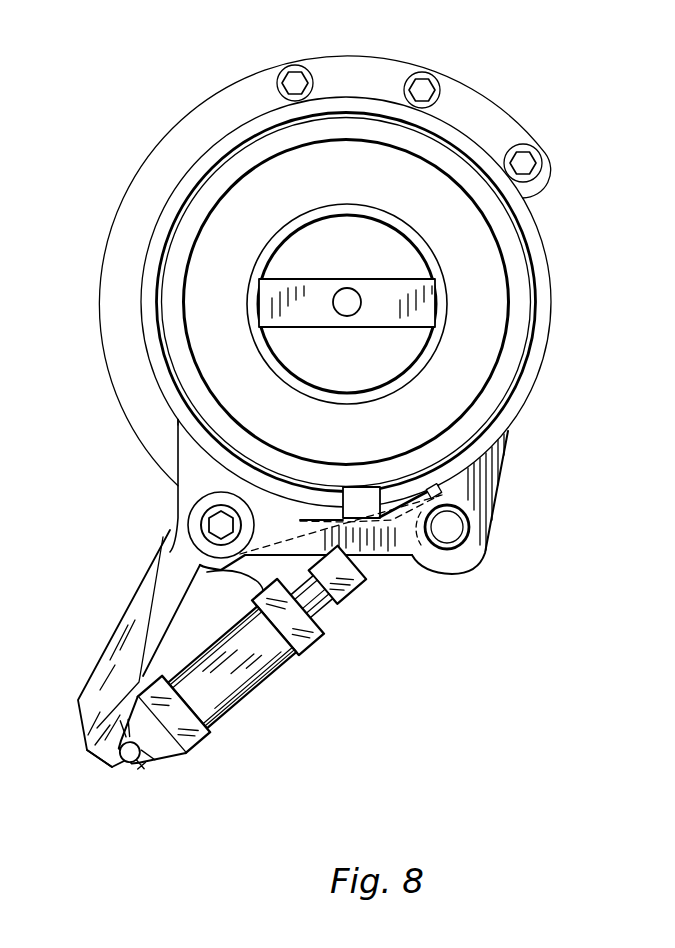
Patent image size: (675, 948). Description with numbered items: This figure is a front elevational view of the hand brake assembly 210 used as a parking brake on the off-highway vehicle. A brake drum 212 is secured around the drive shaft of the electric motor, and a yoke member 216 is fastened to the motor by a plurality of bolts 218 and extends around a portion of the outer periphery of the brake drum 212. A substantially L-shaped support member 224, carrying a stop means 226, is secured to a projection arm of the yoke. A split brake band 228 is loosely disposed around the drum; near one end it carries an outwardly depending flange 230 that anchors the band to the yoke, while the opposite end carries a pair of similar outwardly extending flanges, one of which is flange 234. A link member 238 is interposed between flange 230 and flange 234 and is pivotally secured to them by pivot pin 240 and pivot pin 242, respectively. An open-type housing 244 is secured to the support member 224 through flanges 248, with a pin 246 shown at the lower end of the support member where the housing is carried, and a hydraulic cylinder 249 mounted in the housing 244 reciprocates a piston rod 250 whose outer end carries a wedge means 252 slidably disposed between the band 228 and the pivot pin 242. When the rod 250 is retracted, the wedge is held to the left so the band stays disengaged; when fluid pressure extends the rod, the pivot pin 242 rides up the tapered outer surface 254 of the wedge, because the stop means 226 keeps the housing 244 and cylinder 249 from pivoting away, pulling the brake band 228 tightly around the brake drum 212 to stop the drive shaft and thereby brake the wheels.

The hand brake assembly 210 is at (158, 518).
The brake drum 212 is at (508, 370).
The yoke member 216 is at (162, 158).
The bolts 218 is at (290, 78).
The L-shaped support member 224 is at (130, 640).
The stop means 226 is at (85, 722).
The split brake band 228 is at (545, 271).
The flange 230 is at (185, 467).
The flange 234 is at (490, 483).
The link member 238 is at (268, 562).
The pivot pin 240 is at (221, 527).
The pivot pin 242 is at (450, 528).
The open-type housing 244 is at (200, 728).
The clevis pin 246 is at (123, 762).
The flanges 248 is at (157, 742).
The hydraulic cylinder 249 is at (240, 667).
The piston rod 250 is at (327, 617).
The wedge means 252 is at (353, 588).
The tapered outer surface 254 is at (383, 540).